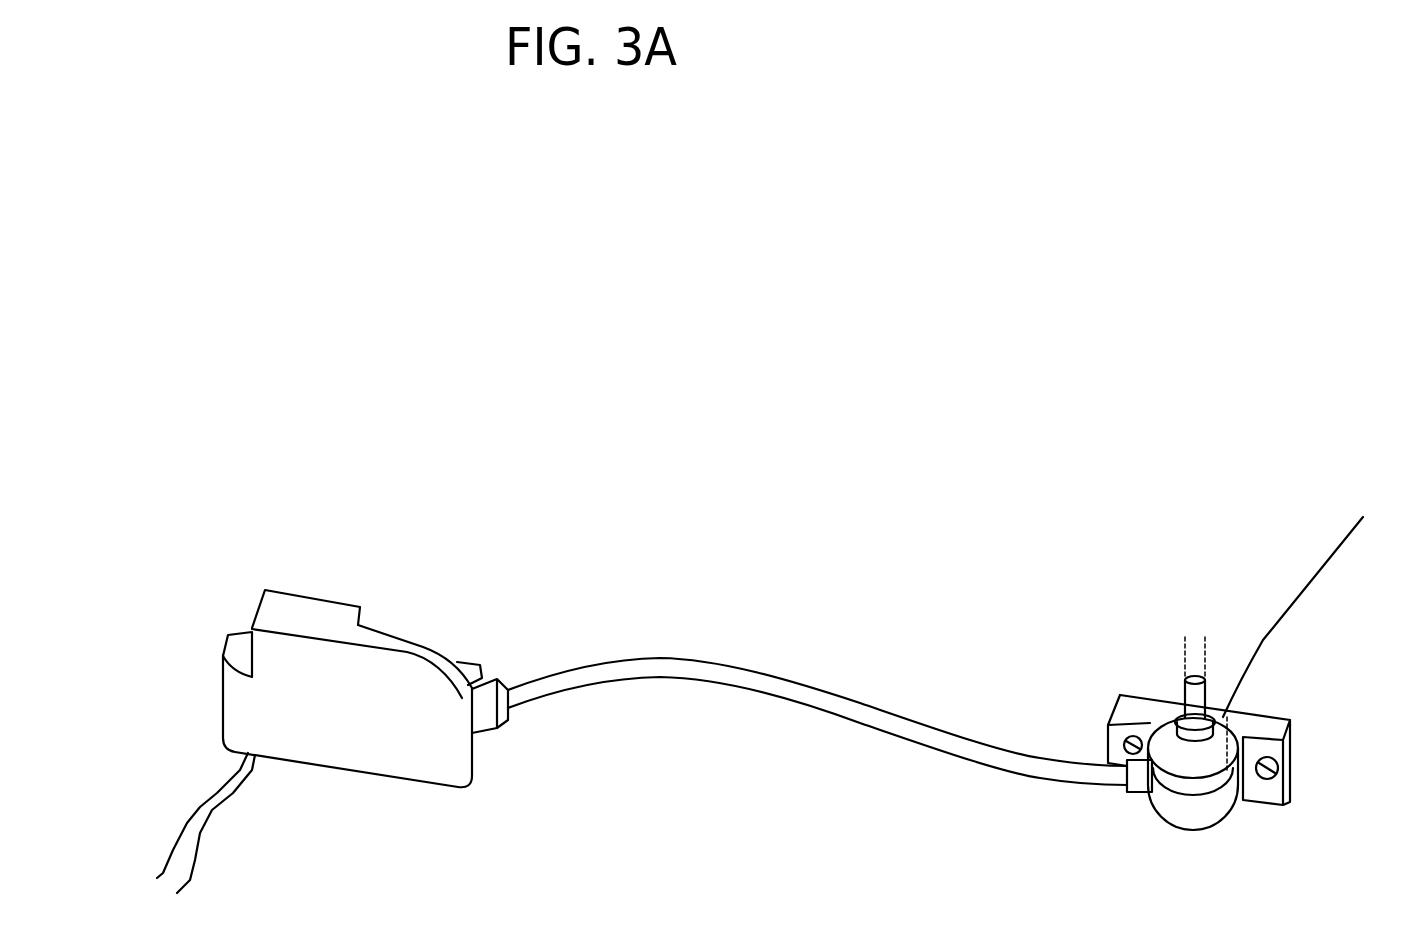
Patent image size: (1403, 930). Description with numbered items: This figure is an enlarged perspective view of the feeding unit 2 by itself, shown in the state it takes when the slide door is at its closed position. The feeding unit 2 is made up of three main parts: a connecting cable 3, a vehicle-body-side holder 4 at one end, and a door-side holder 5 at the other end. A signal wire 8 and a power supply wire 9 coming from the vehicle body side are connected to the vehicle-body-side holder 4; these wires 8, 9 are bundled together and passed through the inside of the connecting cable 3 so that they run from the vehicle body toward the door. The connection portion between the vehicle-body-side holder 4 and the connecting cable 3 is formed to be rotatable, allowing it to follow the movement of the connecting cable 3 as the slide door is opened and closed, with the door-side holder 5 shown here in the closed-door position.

The feeding unit 2 is at (597, 512).
The connecting cable 3 is at (767, 683).
The vehicle-body-side holder 4 is at (340, 733).
The door-side holder 5 is at (1230, 707).
The signal wire 8 is at (183, 817).
The power supply wire 9 is at (198, 843).